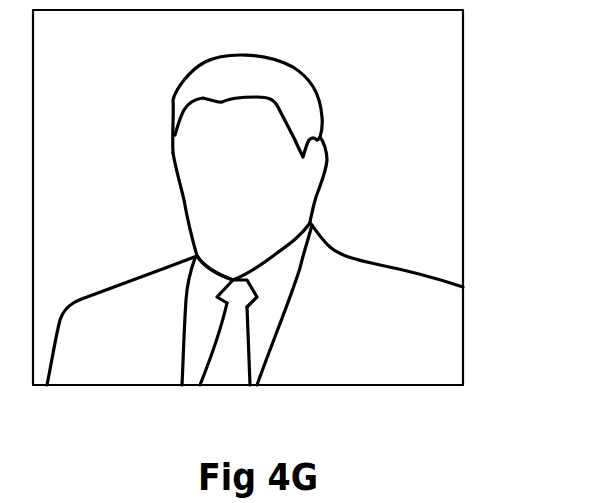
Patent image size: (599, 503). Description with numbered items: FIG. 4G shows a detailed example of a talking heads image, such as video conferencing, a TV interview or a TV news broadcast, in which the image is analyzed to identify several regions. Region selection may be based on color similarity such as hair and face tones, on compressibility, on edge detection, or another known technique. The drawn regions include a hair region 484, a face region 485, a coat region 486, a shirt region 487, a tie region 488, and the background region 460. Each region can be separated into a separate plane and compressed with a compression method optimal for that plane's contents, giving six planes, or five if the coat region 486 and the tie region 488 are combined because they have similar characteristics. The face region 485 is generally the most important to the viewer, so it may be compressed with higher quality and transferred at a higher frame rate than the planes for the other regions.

The background region 460 is at (462, 123).
The hair region 484 is at (313, 108).
The face region 485 is at (300, 182).
The coat region 486 is at (367, 278).
The shirt region 487 is at (205, 305).
The tie region 488 is at (225, 358).